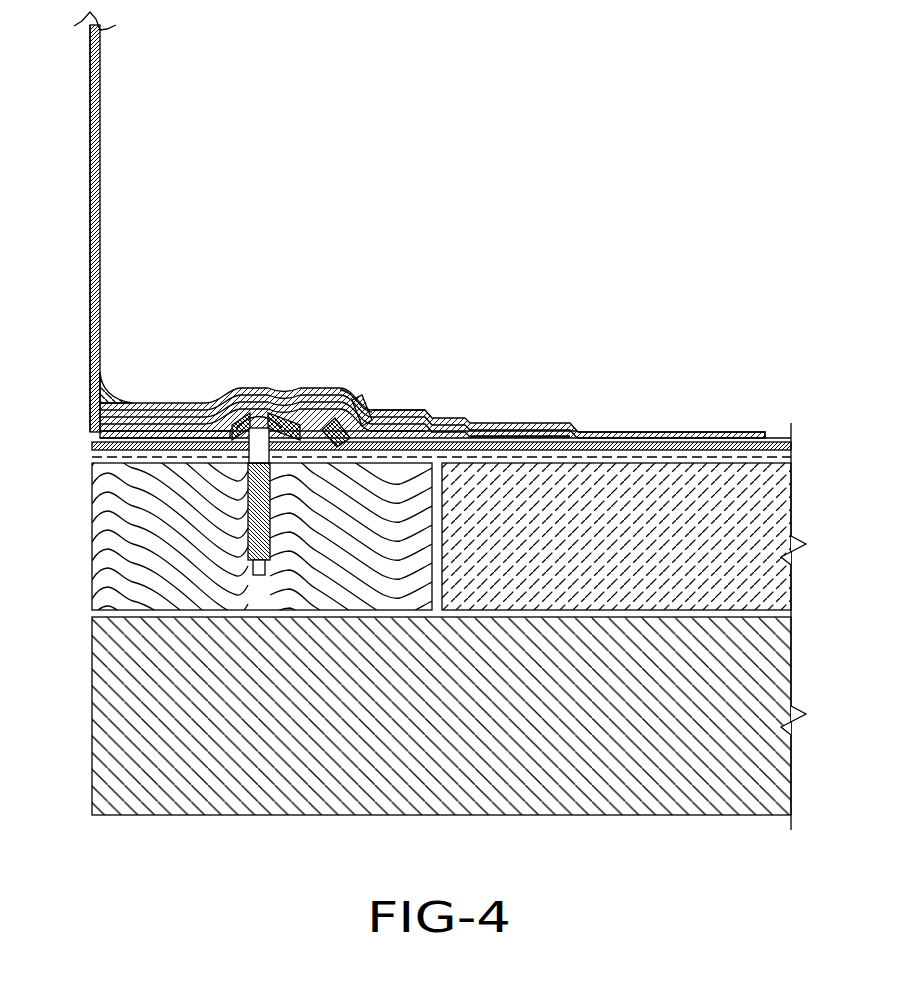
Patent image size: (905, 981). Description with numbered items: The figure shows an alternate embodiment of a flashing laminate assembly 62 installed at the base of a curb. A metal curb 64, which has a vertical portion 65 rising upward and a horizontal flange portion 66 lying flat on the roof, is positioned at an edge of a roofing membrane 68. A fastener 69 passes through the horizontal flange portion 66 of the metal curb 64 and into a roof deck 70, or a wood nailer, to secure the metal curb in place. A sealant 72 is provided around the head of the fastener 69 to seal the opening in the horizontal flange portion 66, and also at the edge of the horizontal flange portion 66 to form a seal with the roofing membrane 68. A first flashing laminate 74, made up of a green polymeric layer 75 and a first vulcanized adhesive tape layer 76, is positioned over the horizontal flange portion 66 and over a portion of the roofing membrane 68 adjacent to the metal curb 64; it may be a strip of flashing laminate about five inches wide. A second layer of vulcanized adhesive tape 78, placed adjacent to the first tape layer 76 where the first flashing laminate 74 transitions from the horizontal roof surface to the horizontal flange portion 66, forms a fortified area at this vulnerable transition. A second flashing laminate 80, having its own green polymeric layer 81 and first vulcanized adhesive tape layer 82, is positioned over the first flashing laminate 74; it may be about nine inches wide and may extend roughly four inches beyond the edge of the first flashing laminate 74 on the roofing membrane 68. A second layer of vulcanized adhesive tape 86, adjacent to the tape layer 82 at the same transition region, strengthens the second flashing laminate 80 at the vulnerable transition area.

The flashing laminate assembly 62 is at (243, 300).
The metal curb 64 is at (102, 120).
The vertical portion 65 is at (90, 207).
The horizontal flange portion 66 is at (140, 426).
The roofing membrane 68 is at (782, 447).
The fastener 69 is at (250, 520).
The roof deck 70 is at (125, 572).
The sealant 72 is at (236, 445).
The first flashing laminate 74 is at (477, 450).
The green polymeric layer 75 is at (517, 435).
The first vulcanized adhesive tape layer 76 is at (525, 442).
The second layer of vulcanized adhesive tape 78 is at (365, 432).
The second flashing laminate 80 is at (614, 433).
The green polymeric layer 81 is at (672, 450).
The first vulcanized adhesive tape layer 82 is at (671, 463).
The second layer of vulcanized adhesive tape 86 is at (404, 410).